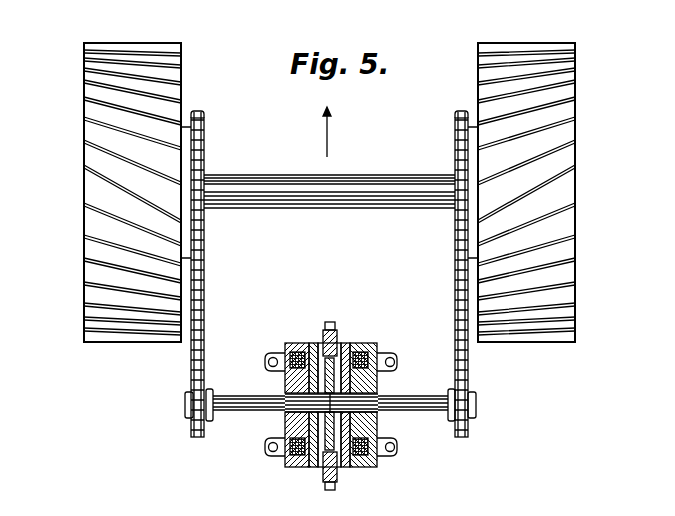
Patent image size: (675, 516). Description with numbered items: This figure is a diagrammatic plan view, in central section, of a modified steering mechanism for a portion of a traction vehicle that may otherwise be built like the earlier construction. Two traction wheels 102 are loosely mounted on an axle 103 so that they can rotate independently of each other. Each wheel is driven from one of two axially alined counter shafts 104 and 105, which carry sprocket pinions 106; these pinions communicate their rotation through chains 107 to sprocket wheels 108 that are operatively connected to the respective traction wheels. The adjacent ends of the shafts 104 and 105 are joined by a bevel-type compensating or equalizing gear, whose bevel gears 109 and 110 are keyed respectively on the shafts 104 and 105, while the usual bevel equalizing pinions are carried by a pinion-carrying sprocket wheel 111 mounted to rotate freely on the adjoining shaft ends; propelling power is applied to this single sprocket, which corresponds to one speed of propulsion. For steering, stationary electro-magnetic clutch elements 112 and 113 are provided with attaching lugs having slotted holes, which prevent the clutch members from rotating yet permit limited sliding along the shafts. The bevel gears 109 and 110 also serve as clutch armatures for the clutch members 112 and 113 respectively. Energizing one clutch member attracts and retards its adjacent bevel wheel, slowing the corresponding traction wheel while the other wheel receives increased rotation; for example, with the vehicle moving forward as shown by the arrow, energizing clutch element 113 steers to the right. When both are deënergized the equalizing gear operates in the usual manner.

The traction wheels 102 is at (97, 154).
The axle 103 is at (362, 185).
The shaft 104 is at (252, 402).
The shaft 105 is at (420, 403).
The sprocket pinions 106 is at (192, 416).
The chains 107 is at (206, 309).
The sprocket wheels 108 is at (197, 110).
The bevel gear 109 is at (318, 343).
The bevel gear 110 is at (352, 343).
The pinion-carrying sprocket wheel 111 is at (336, 328).
The electro-magnetic clutch element 112 is at (293, 467).
The electro-magnetic clutch element 113 is at (367, 467).